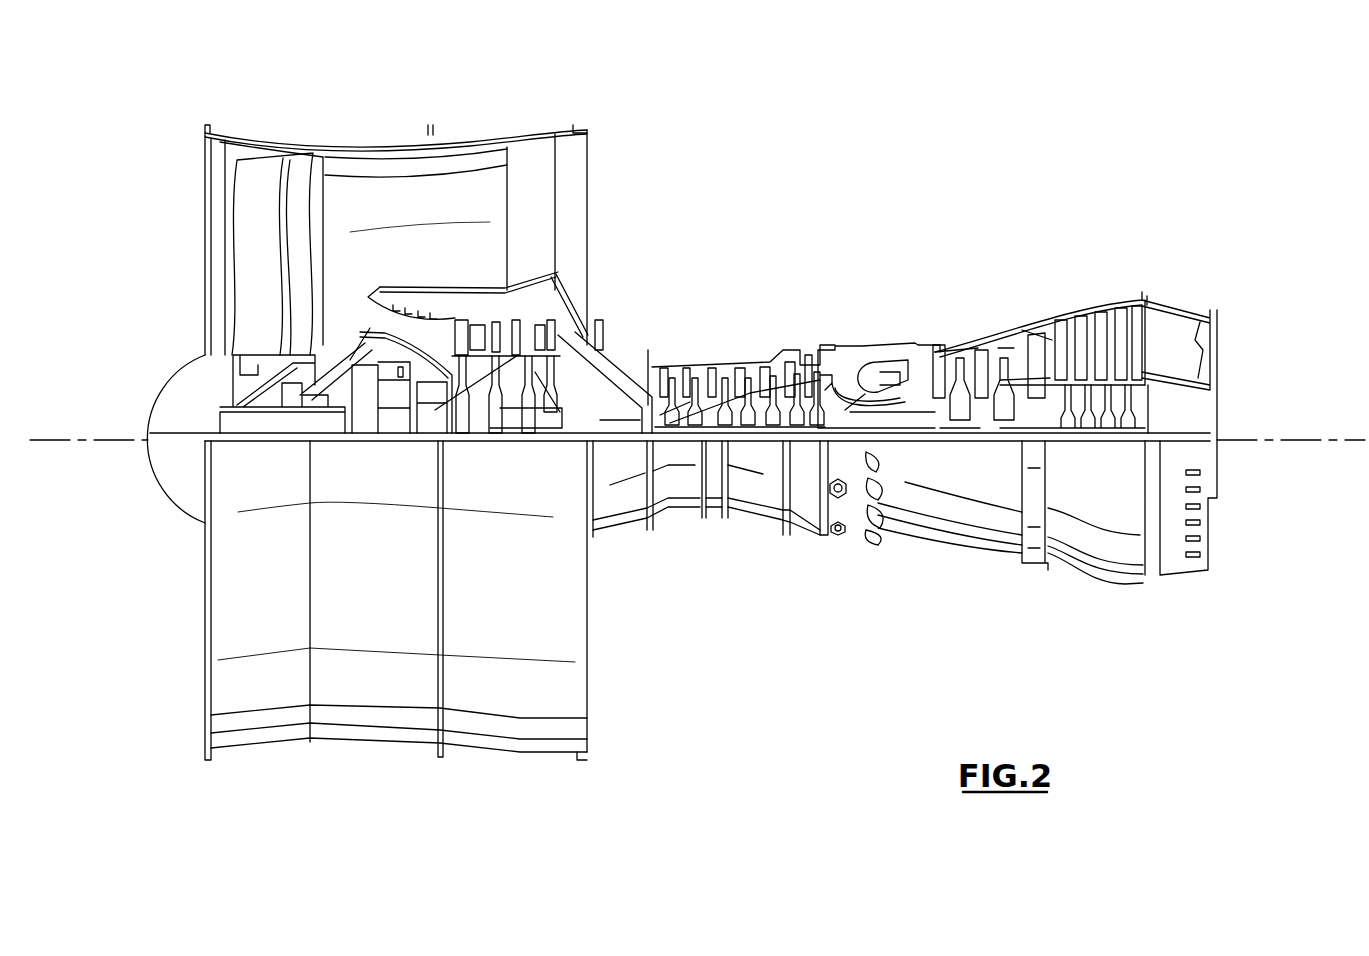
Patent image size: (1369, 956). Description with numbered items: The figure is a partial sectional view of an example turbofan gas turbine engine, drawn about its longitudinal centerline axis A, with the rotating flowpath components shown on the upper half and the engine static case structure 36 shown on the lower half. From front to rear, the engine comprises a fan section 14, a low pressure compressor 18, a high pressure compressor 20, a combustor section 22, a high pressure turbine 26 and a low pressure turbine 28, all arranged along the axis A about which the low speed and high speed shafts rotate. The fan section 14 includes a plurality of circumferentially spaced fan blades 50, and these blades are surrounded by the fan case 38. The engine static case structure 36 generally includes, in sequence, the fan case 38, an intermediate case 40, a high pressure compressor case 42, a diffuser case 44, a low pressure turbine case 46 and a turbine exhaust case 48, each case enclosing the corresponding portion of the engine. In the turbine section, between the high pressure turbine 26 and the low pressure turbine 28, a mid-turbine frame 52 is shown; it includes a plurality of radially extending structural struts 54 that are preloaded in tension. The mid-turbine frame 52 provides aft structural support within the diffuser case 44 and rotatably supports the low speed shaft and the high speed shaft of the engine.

The fan section 14 is at (367, 286).
The low pressure compressor 18 is at (650, 333).
The high pressure compressor 20 is at (815, 337).
The combustor section 22 is at (815, 337).
The high pressure turbine 26 is at (978, 337).
The low pressure turbine 28 is at (1042, 307).
The engine static case structure 36 is at (835, 676).
The fan case 38 is at (205, 765).
The intermediate case 40 is at (655, 537).
The high pressure compressor case 42 is at (655, 537).
The diffuser case 44 is at (818, 580).
The low pressure turbine case 46 is at (1143, 580).
The turbine exhaust case 48 is at (1143, 580).
The fan blade 50 is at (234, 254).
The mid-turbine frame 52 is at (1040, 340).
The structural strut 54 is at (1010, 345).
The longitudinal centerline axis A is at (1303, 440).